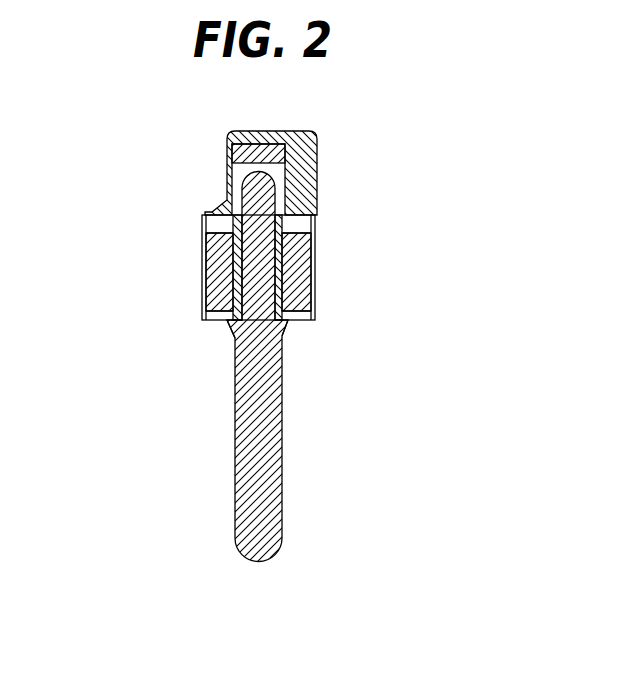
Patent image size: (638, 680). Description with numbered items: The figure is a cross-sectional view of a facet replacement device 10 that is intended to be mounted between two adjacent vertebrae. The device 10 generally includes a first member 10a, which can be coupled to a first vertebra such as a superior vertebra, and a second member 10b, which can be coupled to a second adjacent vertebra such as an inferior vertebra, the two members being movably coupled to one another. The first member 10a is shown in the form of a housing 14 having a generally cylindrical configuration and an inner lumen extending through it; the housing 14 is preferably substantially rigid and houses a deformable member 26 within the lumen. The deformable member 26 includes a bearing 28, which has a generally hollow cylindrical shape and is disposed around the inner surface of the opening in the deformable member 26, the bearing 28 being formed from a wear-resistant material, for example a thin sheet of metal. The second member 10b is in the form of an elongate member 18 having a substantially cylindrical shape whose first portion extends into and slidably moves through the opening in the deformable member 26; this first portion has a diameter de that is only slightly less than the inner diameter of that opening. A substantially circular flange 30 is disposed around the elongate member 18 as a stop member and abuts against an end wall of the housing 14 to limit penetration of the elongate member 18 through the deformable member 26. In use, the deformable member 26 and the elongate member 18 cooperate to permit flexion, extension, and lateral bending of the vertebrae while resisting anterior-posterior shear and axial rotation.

The facet replacement device 10 is at (384, 138).
The first member 10a is at (95, 135).
The second member 10b is at (95, 328).
The housing 14 is at (203, 248).
The elongate member 18 is at (283, 428).
The deformable member 26 is at (300, 262).
The bearing 28 is at (283, 297).
The flange 30 is at (227, 323).
The diameter of the first portion of the elongate member de is at (271, 258).